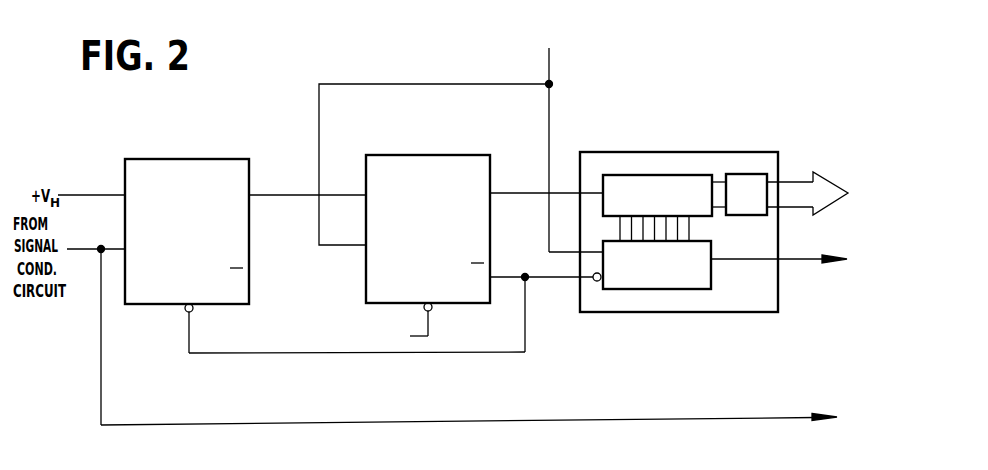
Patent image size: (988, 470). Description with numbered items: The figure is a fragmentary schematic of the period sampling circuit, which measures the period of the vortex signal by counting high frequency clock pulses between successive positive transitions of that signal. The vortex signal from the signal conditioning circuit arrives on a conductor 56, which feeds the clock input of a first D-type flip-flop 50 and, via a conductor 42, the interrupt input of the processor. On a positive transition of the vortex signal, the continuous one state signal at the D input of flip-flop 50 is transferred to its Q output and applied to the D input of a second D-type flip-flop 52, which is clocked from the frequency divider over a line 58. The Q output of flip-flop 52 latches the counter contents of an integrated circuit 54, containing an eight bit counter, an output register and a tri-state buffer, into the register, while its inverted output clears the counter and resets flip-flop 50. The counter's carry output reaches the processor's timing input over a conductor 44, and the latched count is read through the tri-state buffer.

The D-type flip-flop 50 is at (161, 157).
The D-type flip-flop 52 is at (422, 153).
The integrated circuit 54 is at (652, 152).
The conductor 56 is at (112, 245).
The frequency divider input line 58 is at (549, 62).
The conductor 44 is at (793, 263).
The conductor 42 is at (588, 419).